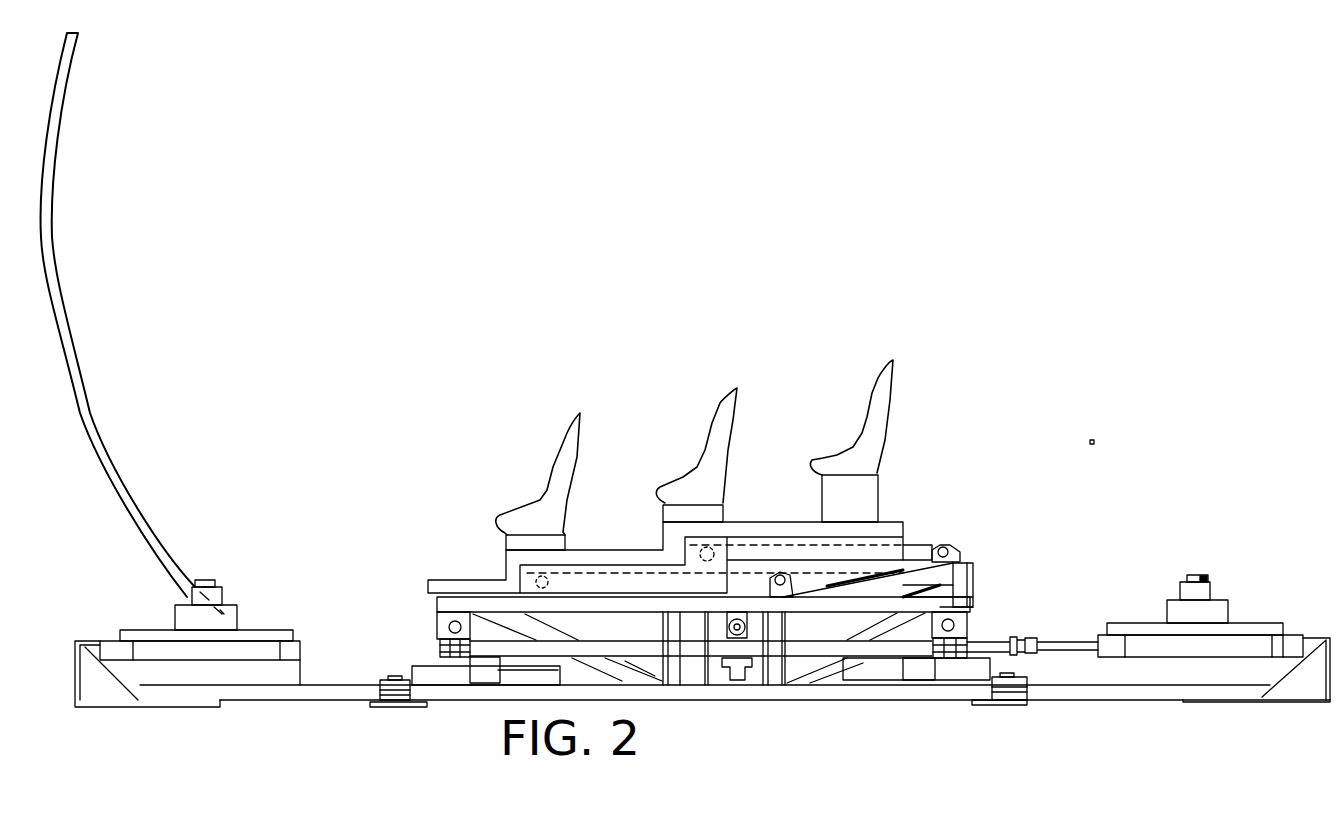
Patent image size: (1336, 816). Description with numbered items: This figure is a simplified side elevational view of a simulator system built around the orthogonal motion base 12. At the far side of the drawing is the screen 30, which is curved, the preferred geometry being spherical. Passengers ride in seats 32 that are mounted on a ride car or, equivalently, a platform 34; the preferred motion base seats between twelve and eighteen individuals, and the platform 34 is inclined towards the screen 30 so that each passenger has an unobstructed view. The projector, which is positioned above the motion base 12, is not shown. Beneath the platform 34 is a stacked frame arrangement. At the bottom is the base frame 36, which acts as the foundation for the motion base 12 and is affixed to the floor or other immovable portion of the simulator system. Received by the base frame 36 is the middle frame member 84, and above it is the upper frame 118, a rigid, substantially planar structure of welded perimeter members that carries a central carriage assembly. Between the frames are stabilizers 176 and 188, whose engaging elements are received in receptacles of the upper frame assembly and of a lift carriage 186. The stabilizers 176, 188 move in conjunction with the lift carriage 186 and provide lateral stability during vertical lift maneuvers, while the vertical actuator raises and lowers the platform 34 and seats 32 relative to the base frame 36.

The orthogonal motion base 12 is at (1094, 438).
The screen 30 is at (72, 360).
The seats 32 is at (873, 390).
The platform 34 is at (888, 520).
The base frame 36 is at (870, 706).
The middle frame member 84 is at (491, 634).
The upper frame 118 is at (982, 578).
The stabilizer 176 is at (640, 573).
The lift carriage 186 is at (924, 526).
The stabilizer 188 is at (928, 545).